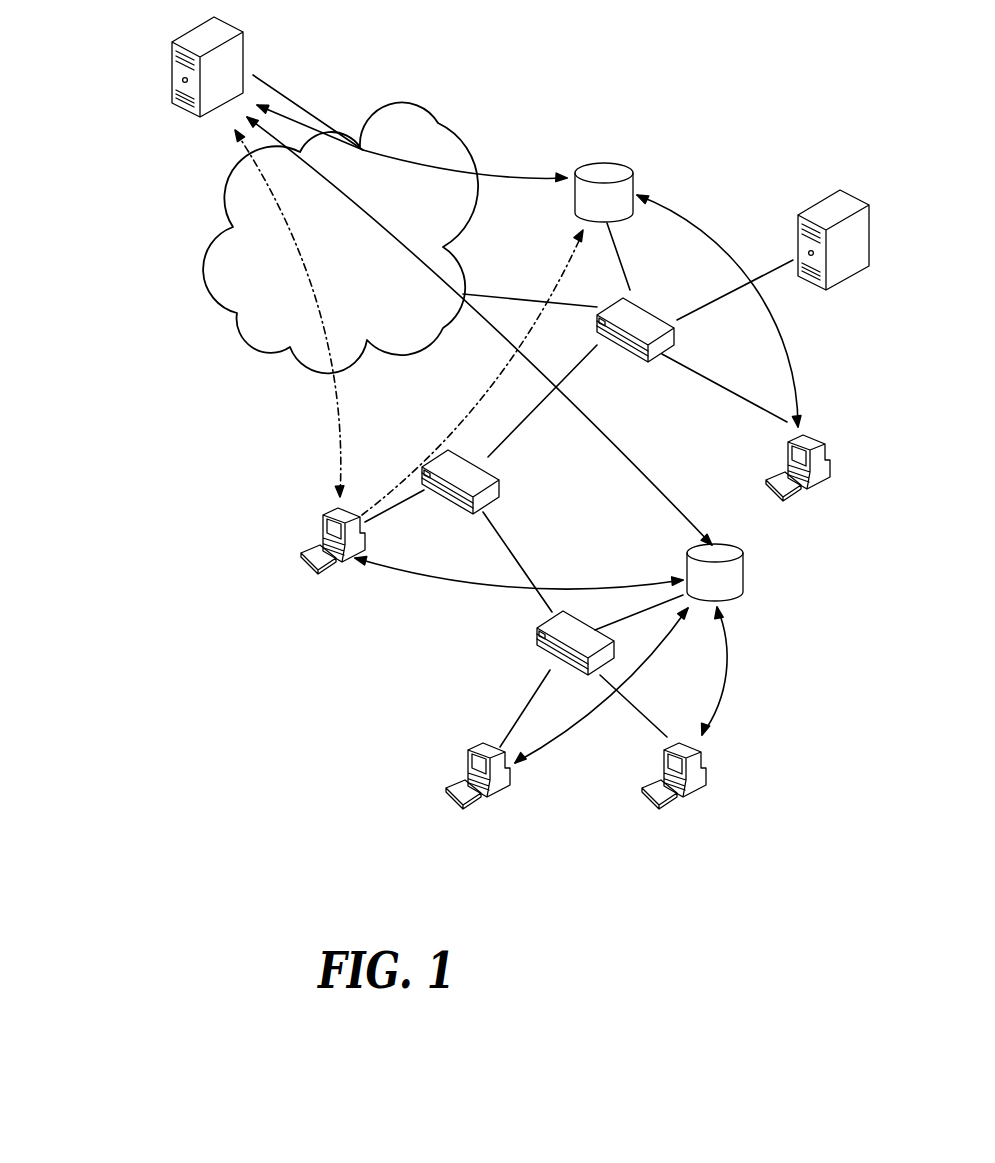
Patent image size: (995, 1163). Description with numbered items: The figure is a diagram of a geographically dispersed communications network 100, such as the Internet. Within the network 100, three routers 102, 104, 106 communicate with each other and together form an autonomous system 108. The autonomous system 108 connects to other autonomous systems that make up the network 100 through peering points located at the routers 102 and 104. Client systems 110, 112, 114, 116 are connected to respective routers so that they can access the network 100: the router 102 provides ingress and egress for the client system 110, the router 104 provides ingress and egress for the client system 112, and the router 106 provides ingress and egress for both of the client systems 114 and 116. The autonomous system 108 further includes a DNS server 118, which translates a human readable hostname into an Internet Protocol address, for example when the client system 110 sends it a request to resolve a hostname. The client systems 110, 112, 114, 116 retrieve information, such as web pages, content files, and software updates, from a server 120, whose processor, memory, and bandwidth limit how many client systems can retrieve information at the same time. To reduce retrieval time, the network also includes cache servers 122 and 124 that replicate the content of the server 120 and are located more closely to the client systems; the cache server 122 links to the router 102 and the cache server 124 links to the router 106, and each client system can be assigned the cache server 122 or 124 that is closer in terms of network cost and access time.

The network 100 is at (175, 285).
The router 102 is at (646, 311).
The router 104 is at (475, 513).
The router 106 is at (537, 636).
The autonomous system 108 is at (688, 124).
The client system 110 is at (790, 437).
The client system 112 is at (320, 510).
The client system 114 is at (470, 747).
The client system 116 is at (670, 747).
The DNS server 118 is at (820, 218).
The server 120 is at (190, 44).
The cache server 122 is at (575, 213).
The cache server 124 is at (745, 577).